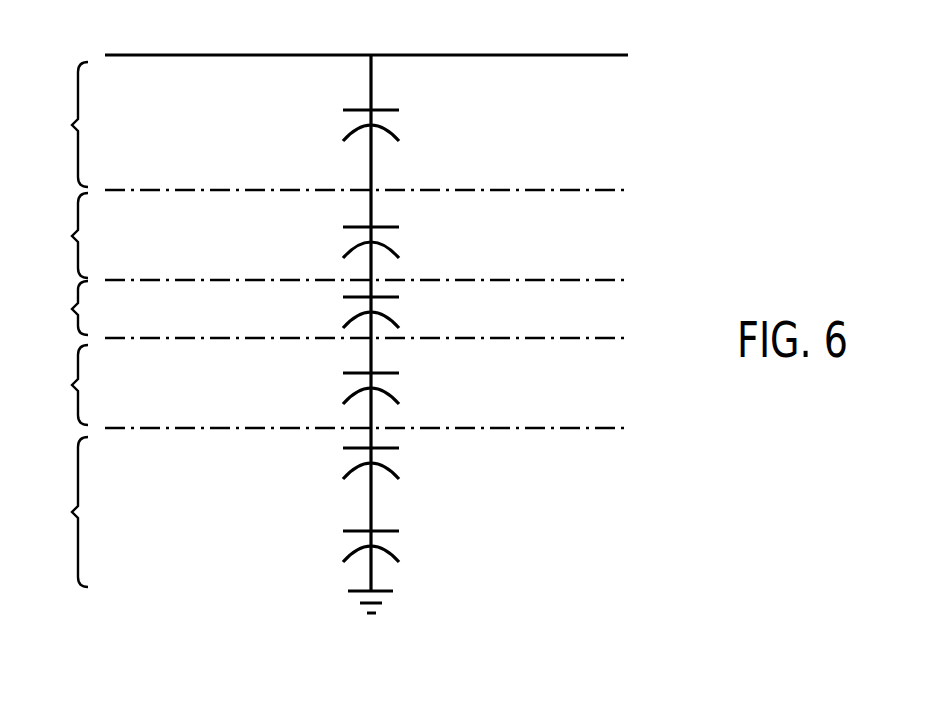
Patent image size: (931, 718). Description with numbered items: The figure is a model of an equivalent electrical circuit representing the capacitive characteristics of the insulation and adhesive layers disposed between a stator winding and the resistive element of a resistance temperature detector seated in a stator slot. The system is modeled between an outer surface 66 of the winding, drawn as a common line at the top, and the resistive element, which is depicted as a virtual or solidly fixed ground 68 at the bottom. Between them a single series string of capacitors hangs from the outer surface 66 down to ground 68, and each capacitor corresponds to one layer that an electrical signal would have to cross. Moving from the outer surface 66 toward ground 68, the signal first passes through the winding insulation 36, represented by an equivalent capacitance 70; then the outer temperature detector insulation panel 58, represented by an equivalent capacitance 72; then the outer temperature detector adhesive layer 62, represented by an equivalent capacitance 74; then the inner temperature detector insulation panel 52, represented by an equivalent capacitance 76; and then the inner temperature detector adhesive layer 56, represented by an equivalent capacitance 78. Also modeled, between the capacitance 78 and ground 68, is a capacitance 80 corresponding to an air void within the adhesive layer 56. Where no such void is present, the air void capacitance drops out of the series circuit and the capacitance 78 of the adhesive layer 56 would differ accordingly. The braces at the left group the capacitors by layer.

The winding insulation 36 is at (64, 124).
The inner temperature detector insulation panel 52 is at (64, 385).
The inner temperature detector adhesive layer 56 is at (64, 512).
The outer temperature detector insulation panel 58 is at (64, 235).
The outer temperature detector adhesive layer 62 is at (64, 308).
The outer surface 66 is at (568, 54).
The ground 68 is at (318, 606).
The equivalent capacitance 70 is at (419, 125).
The equivalent capacitance 72 is at (419, 241).
The equivalent capacitance 74 is at (419, 310).
The equivalent capacitance 76 is at (419, 386).
The equivalent capacitance 78 is at (419, 461).
The capacitance 80 is at (419, 546).